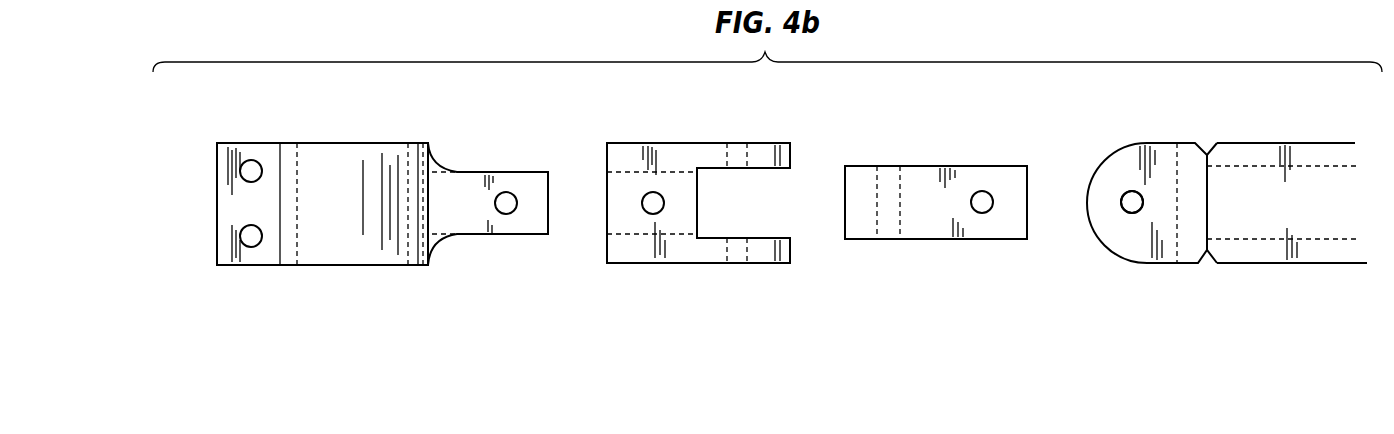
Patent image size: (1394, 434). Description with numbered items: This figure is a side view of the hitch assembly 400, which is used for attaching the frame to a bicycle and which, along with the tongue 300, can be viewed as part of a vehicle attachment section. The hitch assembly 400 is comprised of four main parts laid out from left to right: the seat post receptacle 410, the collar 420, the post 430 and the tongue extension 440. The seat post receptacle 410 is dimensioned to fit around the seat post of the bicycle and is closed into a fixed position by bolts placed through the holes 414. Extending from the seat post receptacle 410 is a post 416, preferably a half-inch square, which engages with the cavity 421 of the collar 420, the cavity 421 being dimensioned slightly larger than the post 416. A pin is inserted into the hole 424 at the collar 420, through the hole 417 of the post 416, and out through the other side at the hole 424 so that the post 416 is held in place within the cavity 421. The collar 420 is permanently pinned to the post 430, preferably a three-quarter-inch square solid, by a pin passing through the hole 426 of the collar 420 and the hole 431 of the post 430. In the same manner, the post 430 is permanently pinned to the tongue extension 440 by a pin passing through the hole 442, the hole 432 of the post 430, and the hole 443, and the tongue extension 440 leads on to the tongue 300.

The tongue 300 is at (1354, 205).
The hitch assembly 400 is at (186, 199).
The seat post receptacle 410 is at (367, 265).
The holes 414 is at (251, 168).
The post 416 is at (458, 235).
The hole 417 is at (510, 198).
The collar 420 is at (686, 265).
The cavity 421 is at (620, 228).
The hole 424 is at (657, 198).
The hole 426 is at (741, 143).
The post 430 is at (930, 240).
The hole 431 is at (889, 166).
The hole 432 is at (983, 190).
The tongue extension 440 is at (1185, 265).
The hole 442 is at (1132, 190).
The hole 443 is at (1132, 202).